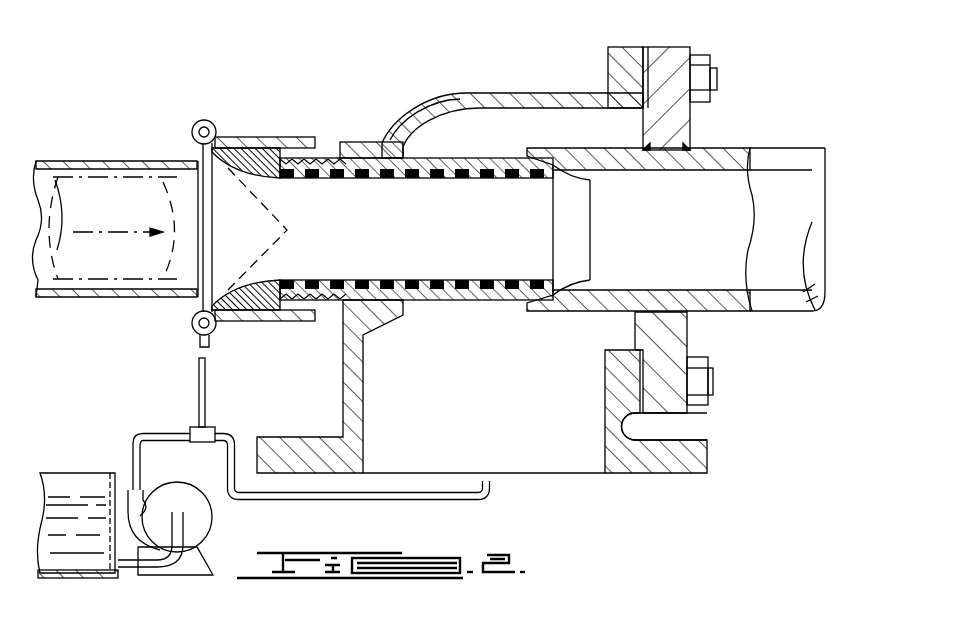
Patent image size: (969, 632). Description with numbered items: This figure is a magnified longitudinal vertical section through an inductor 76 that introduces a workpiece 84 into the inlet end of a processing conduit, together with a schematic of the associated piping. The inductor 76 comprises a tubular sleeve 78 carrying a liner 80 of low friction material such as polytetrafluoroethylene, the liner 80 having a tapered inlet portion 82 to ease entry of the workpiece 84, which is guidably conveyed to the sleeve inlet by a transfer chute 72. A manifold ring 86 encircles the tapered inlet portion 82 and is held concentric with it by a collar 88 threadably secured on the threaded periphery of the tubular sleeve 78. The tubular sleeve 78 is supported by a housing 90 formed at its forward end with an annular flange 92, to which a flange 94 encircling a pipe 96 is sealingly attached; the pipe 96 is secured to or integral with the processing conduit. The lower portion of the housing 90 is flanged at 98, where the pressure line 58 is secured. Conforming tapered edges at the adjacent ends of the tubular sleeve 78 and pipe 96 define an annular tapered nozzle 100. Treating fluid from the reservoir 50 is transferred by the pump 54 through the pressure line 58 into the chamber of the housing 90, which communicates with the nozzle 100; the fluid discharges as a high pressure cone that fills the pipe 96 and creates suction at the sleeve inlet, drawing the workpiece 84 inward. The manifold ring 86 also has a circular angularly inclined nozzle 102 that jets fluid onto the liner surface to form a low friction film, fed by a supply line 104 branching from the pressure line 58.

The reservoir 50 is at (67, 478).
The pump 54 is at (195, 523).
The pressure line 58 is at (357, 502).
The transfer chute 72 is at (85, 163).
The inductor 76 is at (519, 92).
The tubular sleeve 78 is at (456, 158).
The liner 80 is at (413, 178).
The tapered inlet portion 82 is at (260, 307).
The workpiece 84 is at (78, 273).
The manifold ring 86 is at (201, 120).
The collar 88 is at (290, 137).
The housing 90 is at (425, 113).
The annular flange 92 is at (638, 47).
The flange 94 is at (683, 50).
The pipe 96 is at (783, 155).
The flange 98 is at (707, 440).
The annular tapered nozzle 100 is at (560, 170).
The angularly inclined nozzle 102 is at (212, 252).
The supply line 104 is at (205, 390).